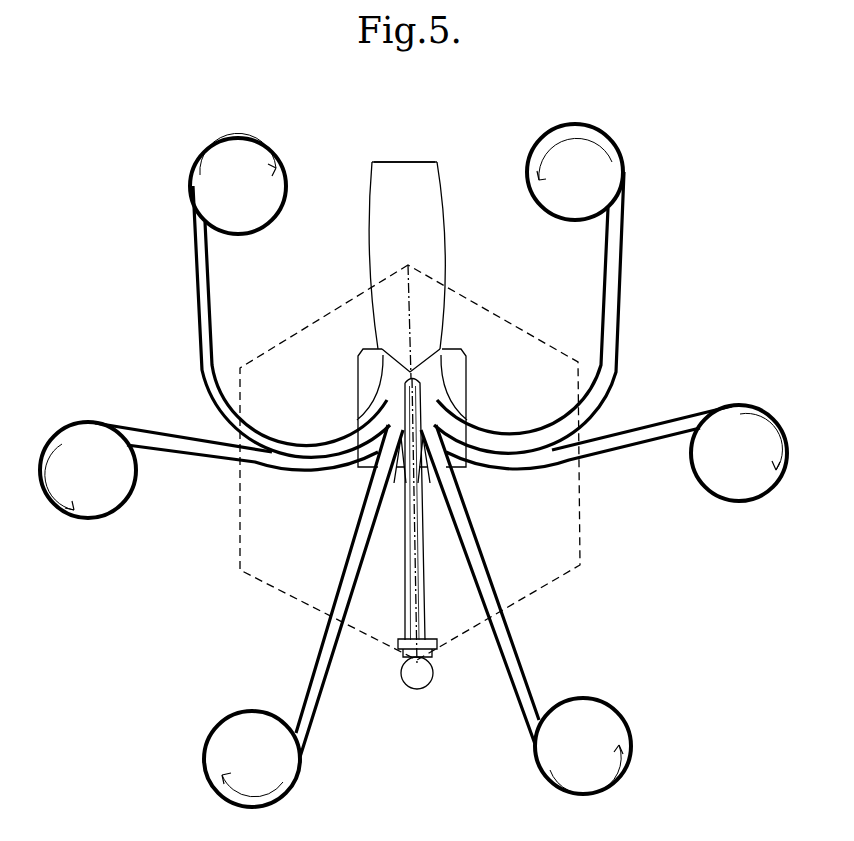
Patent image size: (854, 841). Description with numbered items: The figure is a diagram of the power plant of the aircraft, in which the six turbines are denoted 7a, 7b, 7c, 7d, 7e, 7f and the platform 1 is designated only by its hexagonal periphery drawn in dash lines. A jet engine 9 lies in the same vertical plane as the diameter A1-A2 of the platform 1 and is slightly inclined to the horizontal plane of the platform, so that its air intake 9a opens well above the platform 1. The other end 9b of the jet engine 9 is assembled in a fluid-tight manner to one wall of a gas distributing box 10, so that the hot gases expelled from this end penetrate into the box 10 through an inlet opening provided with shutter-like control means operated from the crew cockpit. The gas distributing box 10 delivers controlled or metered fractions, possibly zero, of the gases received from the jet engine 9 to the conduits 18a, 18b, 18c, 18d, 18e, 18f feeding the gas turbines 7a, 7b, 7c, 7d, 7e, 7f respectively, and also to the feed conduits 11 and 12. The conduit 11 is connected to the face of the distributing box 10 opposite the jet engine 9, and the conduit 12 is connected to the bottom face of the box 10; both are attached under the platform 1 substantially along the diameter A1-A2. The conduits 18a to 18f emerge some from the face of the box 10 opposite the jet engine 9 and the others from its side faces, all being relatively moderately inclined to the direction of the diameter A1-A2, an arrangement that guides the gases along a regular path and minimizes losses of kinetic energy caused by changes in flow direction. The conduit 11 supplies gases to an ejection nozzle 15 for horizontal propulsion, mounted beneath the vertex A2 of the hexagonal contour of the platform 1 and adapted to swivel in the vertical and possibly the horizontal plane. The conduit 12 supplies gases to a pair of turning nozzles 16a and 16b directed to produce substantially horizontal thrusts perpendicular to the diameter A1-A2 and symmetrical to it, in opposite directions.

The platform 1 is at (490, 313).
The turbine 7a is at (595, 137).
The turbine 7b is at (708, 478).
The turbine 7c is at (615, 719).
The turbine 7d is at (220, 738).
The turbine 7e is at (90, 508).
The turbine 7f is at (237, 152).
The jet engine 9 is at (445, 207).
The air intake 9a is at (410, 160).
The other end of jet engine 9b is at (418, 362).
The gas distributing box 10 is at (477, 372).
The conduit 11 is at (428, 568).
The conduit 12 is at (408, 546).
The ejection nozzle 15 is at (432, 669).
The turning nozzle 16a is at (438, 646).
The turning nozzle 16b is at (397, 645).
The conduit 18a is at (528, 445).
The conduit 18b is at (527, 465).
The conduit 18c is at (478, 571).
The conduit 18d is at (343, 573).
The conduit 18e is at (292, 462).
The conduit 18f is at (297, 450).
The diameter end point A1 is at (409, 265).
The vertex of hexagonal contour A2 is at (418, 660).